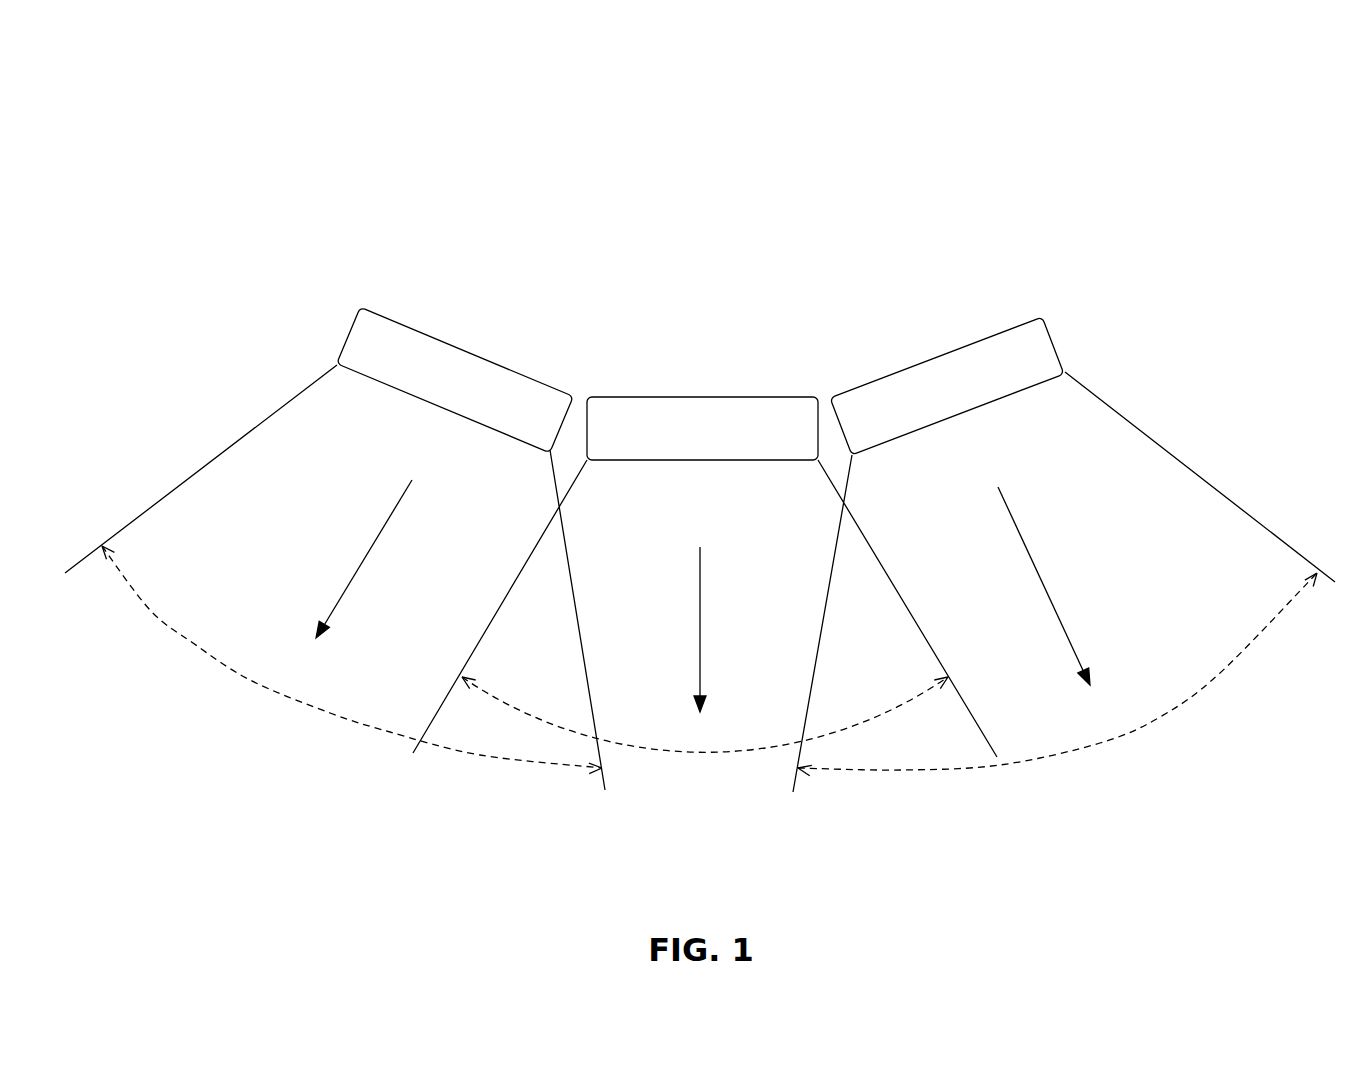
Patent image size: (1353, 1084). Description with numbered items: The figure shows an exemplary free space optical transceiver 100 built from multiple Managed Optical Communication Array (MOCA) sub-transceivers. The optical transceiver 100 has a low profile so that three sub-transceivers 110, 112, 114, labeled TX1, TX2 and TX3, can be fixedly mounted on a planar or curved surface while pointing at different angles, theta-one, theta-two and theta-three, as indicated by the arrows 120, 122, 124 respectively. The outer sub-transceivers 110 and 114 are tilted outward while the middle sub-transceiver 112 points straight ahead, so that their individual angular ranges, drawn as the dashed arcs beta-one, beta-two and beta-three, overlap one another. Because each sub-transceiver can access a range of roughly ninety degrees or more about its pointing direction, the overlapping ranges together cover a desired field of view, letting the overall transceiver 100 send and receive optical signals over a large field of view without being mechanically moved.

The optical transceiver 100 is at (305, 227).
The sub-transceiver 110 is at (397, 320).
The sub-transceiver 112 is at (638, 397).
The sub-transceiver 114 is at (1010, 330).
The arrow 120 is at (382, 530).
The arrow 122 is at (701, 565).
The arrow 124 is at (1042, 583).